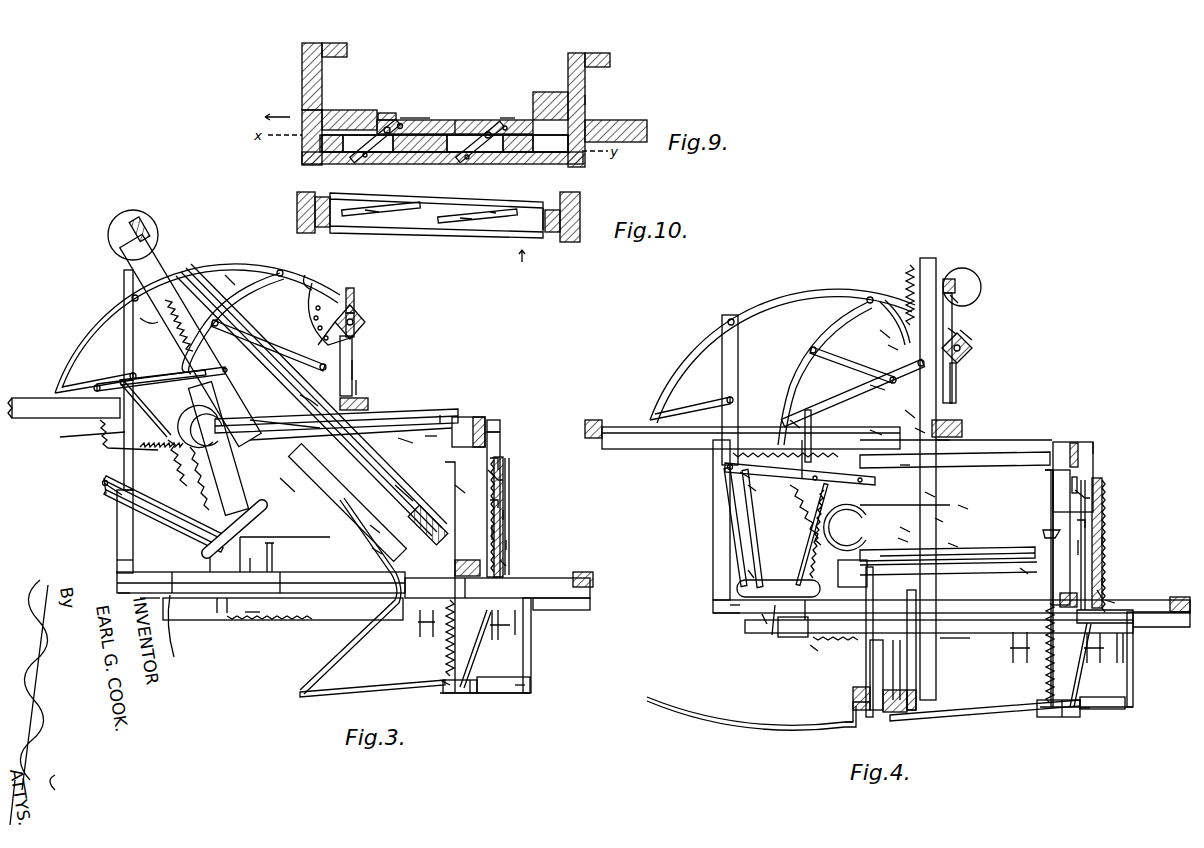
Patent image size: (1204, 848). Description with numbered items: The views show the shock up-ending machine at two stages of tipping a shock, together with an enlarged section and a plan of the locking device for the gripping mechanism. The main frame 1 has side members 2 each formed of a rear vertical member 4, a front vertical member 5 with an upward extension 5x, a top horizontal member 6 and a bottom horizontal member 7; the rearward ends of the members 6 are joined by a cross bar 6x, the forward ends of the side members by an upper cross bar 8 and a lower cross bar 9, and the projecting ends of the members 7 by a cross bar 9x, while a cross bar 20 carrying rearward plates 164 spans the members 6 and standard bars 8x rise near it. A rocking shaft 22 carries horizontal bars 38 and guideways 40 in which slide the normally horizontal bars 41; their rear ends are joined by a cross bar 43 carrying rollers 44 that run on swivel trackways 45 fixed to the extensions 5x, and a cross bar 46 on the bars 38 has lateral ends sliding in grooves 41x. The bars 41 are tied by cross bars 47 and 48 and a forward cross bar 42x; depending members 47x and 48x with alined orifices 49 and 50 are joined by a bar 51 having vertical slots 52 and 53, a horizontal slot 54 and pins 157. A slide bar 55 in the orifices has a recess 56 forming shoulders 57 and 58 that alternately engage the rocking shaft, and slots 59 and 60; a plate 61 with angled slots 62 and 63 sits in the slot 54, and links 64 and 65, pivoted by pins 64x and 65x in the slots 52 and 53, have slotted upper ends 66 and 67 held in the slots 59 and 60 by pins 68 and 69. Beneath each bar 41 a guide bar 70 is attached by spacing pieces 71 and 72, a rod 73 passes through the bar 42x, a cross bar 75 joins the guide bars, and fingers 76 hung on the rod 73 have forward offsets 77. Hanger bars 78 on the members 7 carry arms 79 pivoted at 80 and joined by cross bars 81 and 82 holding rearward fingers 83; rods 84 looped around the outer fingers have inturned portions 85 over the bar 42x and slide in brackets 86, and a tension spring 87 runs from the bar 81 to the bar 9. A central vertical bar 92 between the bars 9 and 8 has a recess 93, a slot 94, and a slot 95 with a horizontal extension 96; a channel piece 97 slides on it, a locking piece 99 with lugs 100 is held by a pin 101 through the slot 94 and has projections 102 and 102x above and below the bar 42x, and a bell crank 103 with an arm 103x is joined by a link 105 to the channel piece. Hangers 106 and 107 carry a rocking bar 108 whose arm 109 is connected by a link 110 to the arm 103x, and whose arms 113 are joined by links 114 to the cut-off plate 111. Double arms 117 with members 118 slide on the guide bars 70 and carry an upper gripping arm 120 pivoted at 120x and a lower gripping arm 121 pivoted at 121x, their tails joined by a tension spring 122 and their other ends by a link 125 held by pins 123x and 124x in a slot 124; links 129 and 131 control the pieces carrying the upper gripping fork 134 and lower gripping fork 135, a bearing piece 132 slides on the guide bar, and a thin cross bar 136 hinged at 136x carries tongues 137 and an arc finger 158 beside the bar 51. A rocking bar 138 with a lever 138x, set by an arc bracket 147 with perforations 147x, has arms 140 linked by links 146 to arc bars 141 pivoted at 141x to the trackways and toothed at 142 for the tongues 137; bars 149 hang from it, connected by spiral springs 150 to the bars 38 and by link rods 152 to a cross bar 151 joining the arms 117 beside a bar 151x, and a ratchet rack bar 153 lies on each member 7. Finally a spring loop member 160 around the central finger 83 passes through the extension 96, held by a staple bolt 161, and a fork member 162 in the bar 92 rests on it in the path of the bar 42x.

In FIG. 3, the main frame 1 is at (118, 575).
In FIG. 4, the main frame 1 is at (718, 612).
In FIG. 3, the side member 2 is at (117, 530).
In FIG. 4, the side member 2 is at (713, 535).
In FIG. 3, the rear vertical member 4 is at (117, 560).
In FIG. 4, the rear vertical member 4 is at (713, 607).
In FIG. 3, the front vertical member 5 is at (478, 417).
In FIG. 4, the front vertical member 5 is at (1076, 443).
In FIG. 3, the upward extension 5x is at (126, 280).
In FIG. 4, the upward extension 5x is at (730, 315).
In FIG. 3, the top horizontal member 6 is at (455, 417).
In FIG. 4, the top horizontal member 6 is at (1055, 442).
In FIG. 4, the cross bar 6x is at (592, 420).
In FIG. 3, the bottom horizontal member 7 is at (150, 595).
In FIG. 4, the bottom horizontal member 7 is at (735, 607).
In FIG. 3, the upper cross bar 8 is at (490, 420).
In FIG. 4, the upper cross bar 8 is at (1093, 445).
In FIG. 3, the standard bar 8x is at (356, 300).
In FIG. 4, the standard bar 8x is at (953, 320).
In FIG. 3, the lower cross bar 9 is at (506, 541).
In FIG. 4, the lower cross bar 9 is at (1102, 570).
In FIG. 3, the cross bar 9x is at (593, 578).
In FIG. 4, the cross bar 9x is at (1180, 612).
In FIG. 3, the cross bar 20 is at (380, 410).
In FIG. 4, the cross bar 20 is at (960, 430).
In FIG. 9, the rocking shaft 22 is at (587, 99).
In FIG. 3, the rocking shaft 22 is at (405, 418).
In FIG. 4, the rocking shaft 22 is at (950, 502).
In FIG. 3, the horizontal bar 38 is at (188, 283).
In FIG. 4, the horizontal bar 38 is at (928, 258).
In FIG. 3, the guideway 40 is at (345, 398).
In FIG. 4, the guideway 40 is at (910, 468).
In FIG. 3, the normally horizontal bar 41 is at (152, 262).
In FIG. 4, the normally horizontal bar 41 is at (987, 290).
In FIG. 3, the groove 41x is at (175, 278).
In FIG. 4, the groove 41x is at (956, 333).
In FIG. 3, the cross bar 42x is at (415, 530).
In FIG. 4, the cross bar 42x is at (895, 712).
In FIG. 3, the cross bar 43 is at (133, 211).
In FIG. 3, the roller 44 is at (146, 212).
In FIG. 4, the roller 44 is at (975, 275).
In FIG. 3, the swivel track way 45 is at (58, 375).
In FIG. 4, the swivel track way 45 is at (676, 366).
In FIG. 3, the cross bar 46 is at (411, 493).
In FIG. 4, the cross bar 46 is at (985, 575).
In FIG. 9, the cross bar 47 is at (338, 50).
In FIG. 3, the cross bar 47 is at (238, 300).
In FIG. 4, the cross bar 47 is at (942, 443).
In FIG. 9, the depending member 47x is at (302, 78).
In FIG. 10, the depending member 47x is at (297, 210).
In FIG. 3, the depending member 47x is at (232, 278).
In FIG. 4, the depending member 47x is at (920, 432).
In FIG. 9, the cross bar 48 is at (603, 60).
In FIG. 3, the cross bar 48 is at (370, 424).
In FIG. 4, the cross bar 48 is at (975, 555).
In FIG. 9, the depending member 48x is at (585, 85).
In FIG. 10, the depending member 48x is at (576, 240).
In FIG. 3, the depending member 48x is at (405, 441).
In FIG. 4, the depending member 48x is at (940, 556).
In FIG. 9, the orifice 49 is at (300, 108).
In FIG. 3, the orifice 49 is at (217, 323).
In FIG. 4, the orifice 49 is at (993, 464).
In FIG. 9, the orifice 50 is at (590, 108).
In FIG. 3, the orifice 50 is at (430, 438).
In FIG. 4, the orifice 50 is at (866, 660).
In FIG. 9, the bar 51 is at (302, 150).
In FIG. 10, the bar 51 is at (580, 209).
In FIG. 3, the bar 51 is at (290, 488).
In FIG. 4, the bar 51 is at (913, 417).
In FIG. 9, the vertical slot 52 is at (410, 153).
In FIG. 9, the vertical slot 53 is at (510, 153).
In FIG. 9, the horizontal slot 54 is at (545, 153).
In FIG. 10, the horizontal slot 54 is at (546, 238).
In FIG. 9, the slide bar 55 is at (350, 112).
In FIG. 3, the slide bar 55 is at (354, 372).
In FIG. 4, the slide bar 55 is at (958, 547).
In FIG. 9, the longitudinal recess 56 is at (445, 120).
In FIG. 3, the longitudinal recess 56 is at (302, 393).
In FIG. 4, the longitudinal recess 56 is at (968, 509).
In FIG. 9, the shoulder 57 is at (386, 113).
In FIG. 3, the shoulder 57 is at (358, 385).
In FIG. 4, the shoulder 57 is at (935, 497).
In FIG. 9, the shoulder 58 is at (636, 142).
In FIG. 3, the shoulder 58 is at (340, 512).
In FIG. 4, the shoulder 58 is at (908, 542).
In FIG. 9, the slot 59 is at (402, 124).
In FIG. 9, the slot 60 is at (490, 132).
In FIG. 9, the plate 61 is at (330, 158).
In FIG. 10, the plate 61 is at (420, 234).
In FIG. 3, the plate 61 is at (250, 455).
In FIG. 4, the plate 61 is at (943, 522).
In FIG. 9, the slot 62 is at (374, 118).
In FIG. 10, the slot 62 is at (352, 215).
In FIG. 9, the slot 63 is at (465, 161).
In FIG. 10, the slot 63 is at (500, 216).
In FIG. 9, the link 64 is at (358, 153).
In FIG. 10, the link 64 is at (376, 214).
In FIG. 9, the pin 64x is at (335, 153).
In FIG. 9, the link 65 is at (455, 121).
In FIG. 10, the link 65 is at (467, 222).
In FIG. 9, the pin 65x is at (455, 151).
In FIG. 9, the longitudinal slot 66 is at (388, 127).
In FIG. 9, the longitudinal slot 67 is at (505, 120).
In FIG. 9, the pin 68 is at (418, 118).
In FIG. 9, the pin 69 is at (504, 125).
In FIG. 3, the guide bar 70 is at (147, 321).
In FIG. 4, the guide bar 70 is at (893, 350).
In FIG. 3, the spacing piece 71 is at (130, 300).
In FIG. 4, the spacing piece 71 is at (893, 300).
In FIG. 3, the spacing piece 72 is at (380, 552).
In FIG. 4, the spacing piece 72 is at (876, 710).
In FIG. 3, the rod 73 is at (377, 530).
In FIG. 4, the rod 73 is at (917, 692).
In FIG. 3, the cross bar 75 is at (261, 587).
In FIG. 4, the cross bar 75 is at (853, 695).
In FIG. 3, the finger 76 is at (300, 688).
In FIG. 4, the finger 76 is at (760, 723).
In FIG. 3, the forwardly offset portion 77 is at (497, 588).
In FIG. 4, the forwardly offset portion 77 is at (850, 724).
In FIG. 3, the hanger bar 78 is at (531, 649).
In FIG. 4, the hanger bar 78 is at (1133, 678).
In FIG. 3, the arm 79 is at (505, 693).
In FIG. 4, the arm 79 is at (1100, 709).
In FIG. 3, the pivot 80 is at (530, 690).
In FIG. 4, the pivot 80 is at (1133, 707).
In FIG. 3, the cross bar 81 is at (452, 693).
In FIG. 4, the cross bar 81 is at (1045, 717).
In FIG. 3, the cross bar 82 is at (472, 693).
In FIG. 4, the cross bar 82 is at (1065, 717).
In FIG. 3, the finger 83 is at (360, 694).
In FIG. 4, the finger 83 is at (970, 716).
In FIG. 3, the rod 84 is at (448, 660).
In FIG. 4, the rod 84 is at (1046, 683).
In FIG. 3, the inturned portion 85 is at (452, 470).
In FIG. 4, the inturned portion 85 is at (1050, 490).
In FIG. 3, the bracket 86 is at (474, 588).
In FIG. 3, the tension spring 87 is at (470, 690).
In FIG. 4, the tension spring 87 is at (1113, 603).
In FIG. 3, the vertical bar 92 is at (500, 435).
In FIG. 4, the vertical bar 92 is at (1088, 458).
In FIG. 3, the recess 93 is at (505, 478).
In FIG. 4, the recess 93 is at (1090, 505).
In FIG. 3, the vertical slot 94 is at (500, 462).
In FIG. 4, the vertical slot 94 is at (1080, 480).
In FIG. 3, the vertical slot 95 is at (501, 536).
In FIG. 4, the vertical slot 95 is at (1090, 548).
In FIG. 3, the horizontal extension 96 is at (500, 505).
In FIG. 4, the horizontal extension 96 is at (1095, 528).
In FIG. 3, the channel piece 97 is at (511, 466).
In FIG. 4, the channel piece 97 is at (1090, 486).
In FIG. 3, the locking piece 99 is at (455, 490).
In FIG. 4, the locking piece 99 is at (1048, 538).
In FIG. 3, the lug 100 is at (458, 430).
In FIG. 4, the lug 100 is at (1050, 471).
In FIG. 3, the pin 101 is at (509, 481).
In FIG. 4, the pin 101 is at (1100, 500).
In FIG. 4, the rearward projection 102 is at (1102, 500).
In FIG. 3, the projection 102x is at (504, 493).
In FIG. 4, the projection 102x is at (1024, 573).
In FIG. 3, the bell crank 103 is at (506, 563).
In FIG. 4, the bell crank 103 is at (1102, 595).
In FIG. 3, the upwardly extending arm 103x is at (511, 546).
In FIG. 4, the upwardly extending arm 103x is at (1104, 583).
In FIG. 3, the link 105 is at (506, 516).
In FIG. 4, the link 105 is at (1102, 540).
In FIG. 3, the hanger 106 is at (500, 632).
In FIG. 3, the hanger 107 is at (222, 616).
In FIG. 4, the hanger 107 is at (793, 627).
In FIG. 4, the rocking bar 108 is at (960, 642).
In FIG. 3, the arm 109 is at (518, 640).
In FIG. 4, the arm 109 is at (1125, 650).
In FIG. 3, the link 110 is at (470, 655).
In FIG. 4, the link 110 is at (1078, 700).
In FIG. 3, the cut-off plate 111 is at (285, 554).
In FIG. 4, the cut-off plate 111 is at (939, 626).
In FIG. 3, the arm 113 is at (427, 632).
In FIG. 4, the arm 113 is at (896, 655).
In FIG. 3, the link 114 is at (440, 655).
In FIG. 4, the link 114 is at (1045, 700).
In FIG. 3, the double arm 117 is at (112, 498).
In FIG. 4, the double arm 117 is at (725, 466).
In FIG. 3, the member 118 is at (140, 445).
In FIG. 4, the member 118 is at (745, 480).
In FIG. 3, the main upper gripping arm 120 is at (270, 405).
In FIG. 4, the main upper gripping arm 120 is at (805, 597).
In FIG. 4, the pivot 120x is at (875, 435).
In FIG. 3, the lower main gripping arm 121 is at (170, 512).
In FIG. 4, the lower main gripping arm 121 is at (743, 587).
In FIG. 3, the pivot 121x is at (103, 485).
In FIG. 4, the pivot 121x is at (727, 470).
In FIG. 3, the tension spring 122 is at (103, 480).
In FIG. 4, the tension spring 122 is at (805, 440).
In FIG. 3, the pin 123x is at (187, 377).
In FIG. 4, the pin 123x is at (880, 390).
In FIG. 4, the slot 124 is at (785, 490).
In FIG. 3, the pin 124x is at (112, 593).
In FIG. 3, the link 125 is at (175, 470).
In FIG. 4, the link 125 is at (753, 490).
In FIG. 3, the link 129 is at (200, 572).
In FIG. 4, the link 129 is at (805, 630).
In FIG. 3, the link 131 is at (176, 640).
In FIG. 4, the link 131 is at (753, 573).
In FIG. 3, the supplemental bearing piece 132 is at (312, 394).
In FIG. 4, the supplemental bearing piece 132 is at (910, 530).
In FIG. 3, the upper gripping fork 134 is at (294, 582).
In FIG. 4, the upper gripping fork 134 is at (765, 622).
In FIG. 3, the lower gripping fork 135 is at (240, 573).
In FIG. 4, the lower gripping fork 135 is at (760, 640).
In FIG. 3, the thin cross bar 136 is at (195, 470).
In FIG. 4, the thin cross bar 136 is at (806, 560).
In FIG. 3, the hinge 136x is at (160, 582).
In FIG. 3, the tongue 137 is at (185, 448).
In FIG. 4, the tongue 137 is at (795, 500).
In FIG. 3, the rocking bar 138 is at (366, 326).
In FIG. 4, the rocking bar 138 is at (975, 345).
In FIG. 3, the lever 138x is at (316, 280).
In FIG. 4, the lever 138x is at (885, 335).
In FIG. 3, the arm 140 is at (368, 333).
In FIG. 4, the arm 140 is at (972, 340).
In FIG. 3, the arc-shaped bar 141 is at (260, 311).
In FIG. 4, the arc-shaped bar 141 is at (823, 279).
In FIG. 3, the pivot 141x is at (281, 270).
In FIG. 4, the pivot 141x is at (884, 243).
In FIG. 3, the ratchet teeth 142 is at (165, 518).
In FIG. 4, the ratchet teeth 142 is at (735, 515).
In FIG. 3, the link 146 is at (283, 350).
In FIG. 4, the link 146 is at (813, 350).
In FIG. 3, the arc bracket 147 is at (352, 301).
In FIG. 4, the arc bracket 147 is at (960, 300).
In FIG. 3, the perforation 147x is at (355, 292).
In FIG. 3, the bar 149 is at (100, 385).
In FIG. 4, the bar 149 is at (790, 418).
In FIG. 3, the spiral spring 150 is at (150, 355).
In FIG. 4, the spiral spring 150 is at (910, 262).
In FIG. 3, the cross bar 151 is at (290, 412).
In FIG. 4, the cross bar 151 is at (751, 438).
In FIG. 3, the bar 151x is at (64, 408).
In FIG. 3, the link rod 152 is at (60, 392).
In FIG. 4, the link rod 152 is at (795, 425).
In FIG. 3, the ratchet rack bar 153 is at (250, 620).
In FIG. 4, the ratchet rack bar 153 is at (815, 650).
In FIG. 4, the pin 157 is at (852, 573).
In FIG. 3, the arc-shape finger 158 is at (240, 456).
In FIG. 4, the arc-shape finger 158 is at (825, 535).
In FIG. 3, the loop member 160 is at (520, 690).
In FIG. 4, the loop member 160 is at (1085, 710).
In FIG. 3, the staple bolt 161 is at (545, 597).
In FIG. 4, the staple bolt 161 is at (1088, 612).
In FIG. 3, the fork member 162 is at (472, 560).
In FIG. 4, the fork member 162 is at (1070, 588).
In FIG. 3, the plate 164 is at (365, 400).
In FIG. 4, the plate 164 is at (962, 425).